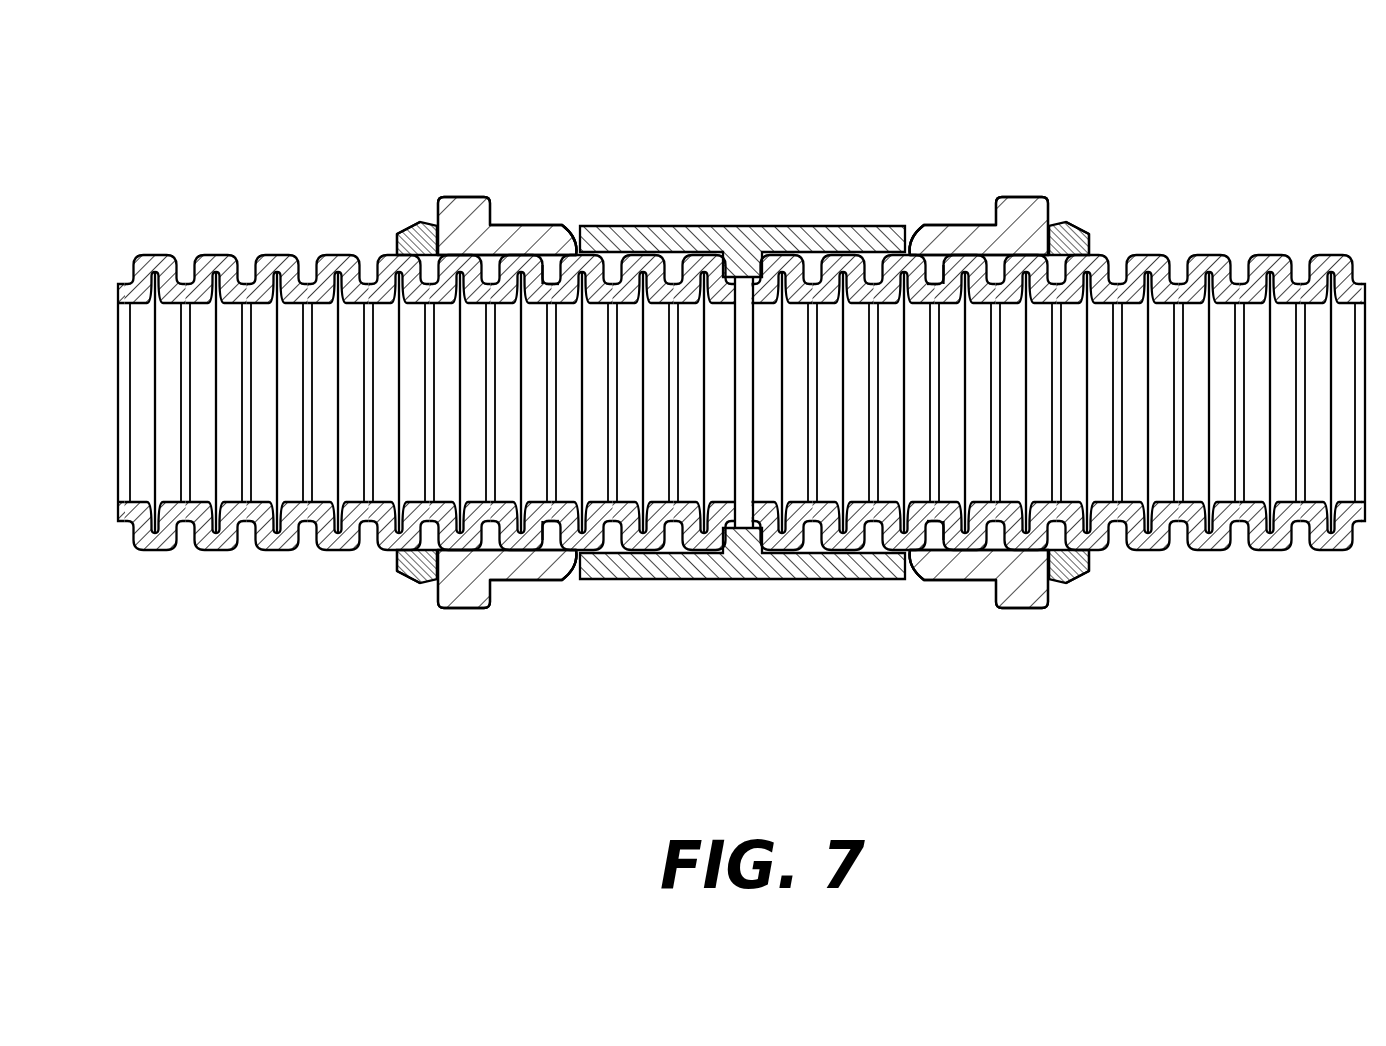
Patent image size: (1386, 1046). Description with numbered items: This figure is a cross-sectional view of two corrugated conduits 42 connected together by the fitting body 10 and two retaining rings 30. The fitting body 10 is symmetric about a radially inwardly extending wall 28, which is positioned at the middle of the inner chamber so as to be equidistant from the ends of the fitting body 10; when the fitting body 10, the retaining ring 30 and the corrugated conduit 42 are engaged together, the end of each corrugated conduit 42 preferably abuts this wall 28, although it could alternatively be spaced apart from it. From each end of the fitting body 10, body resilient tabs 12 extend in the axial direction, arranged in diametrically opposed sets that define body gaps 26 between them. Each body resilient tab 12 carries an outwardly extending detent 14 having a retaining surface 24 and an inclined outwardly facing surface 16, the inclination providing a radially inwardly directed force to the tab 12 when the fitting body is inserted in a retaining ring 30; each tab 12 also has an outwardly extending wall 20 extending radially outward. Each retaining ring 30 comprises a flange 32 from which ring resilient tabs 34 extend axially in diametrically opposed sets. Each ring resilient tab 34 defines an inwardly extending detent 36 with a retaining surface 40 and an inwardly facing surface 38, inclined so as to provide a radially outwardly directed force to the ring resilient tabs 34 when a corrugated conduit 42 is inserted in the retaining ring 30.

The fitting body 10 is at (741, 388).
The body resilient tabs 12 is at (408, 222).
The outwardly extending detent 14 is at (398, 237).
The outwardly facing surface 16 is at (405, 222).
The outwardly extending wall 20 is at (740, 375).
The retaining surface 24 is at (425, 222).
The body gaps 26 is at (568, 247).
The radially inwardly extending wall 28 is at (748, 226).
The retaining ring 30 is at (739, 375).
The flange 32 is at (458, 205).
The ring resilient tabs 34 is at (536, 238).
The inwardly extending detent 36 is at (542, 240).
The inwardly facing surface 38 is at (562, 273).
The retaining surface 40 is at (562, 260).
The corrugated conduit 42 is at (226, 548).